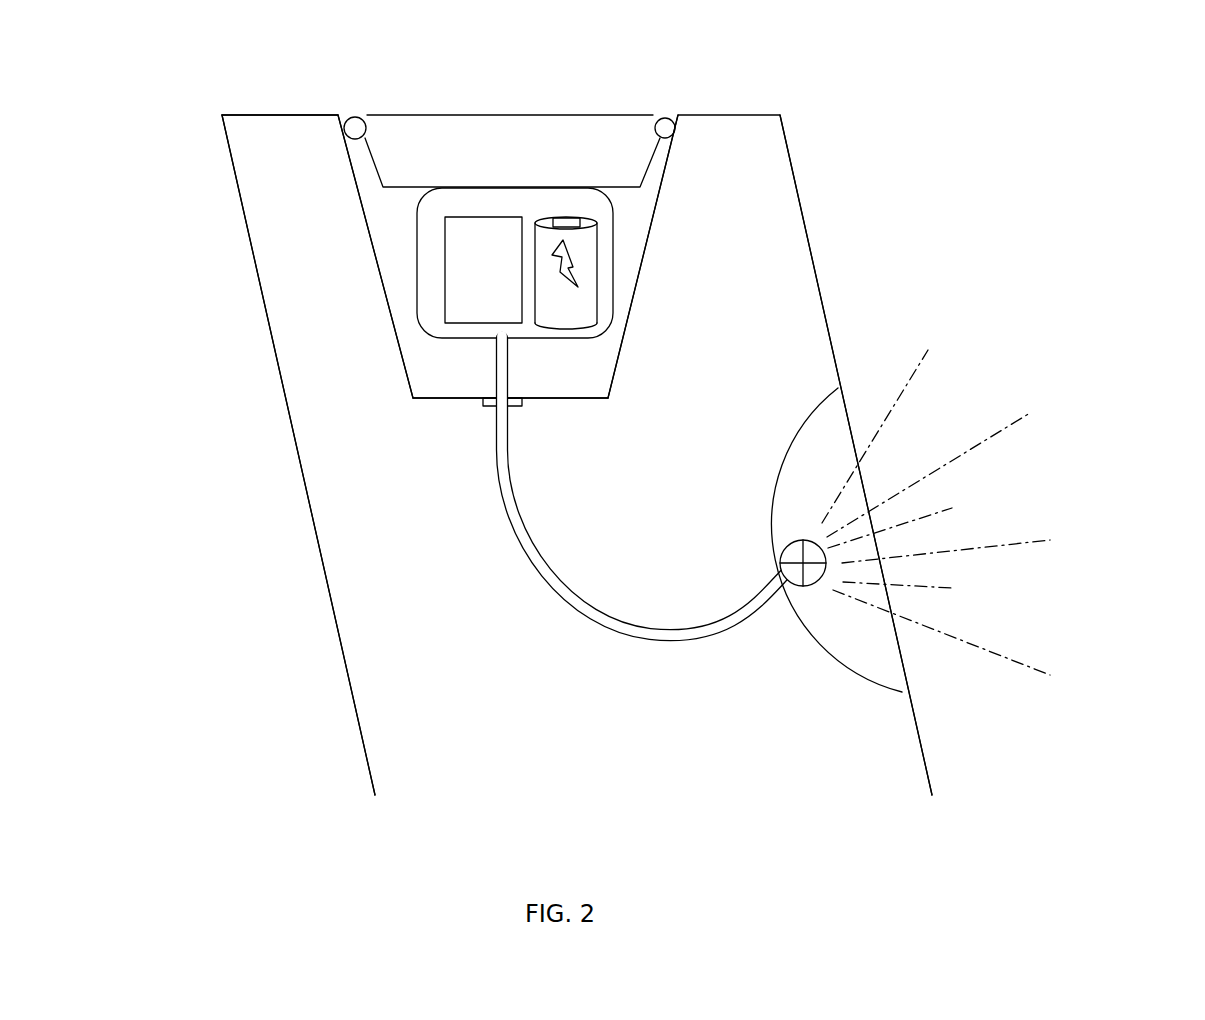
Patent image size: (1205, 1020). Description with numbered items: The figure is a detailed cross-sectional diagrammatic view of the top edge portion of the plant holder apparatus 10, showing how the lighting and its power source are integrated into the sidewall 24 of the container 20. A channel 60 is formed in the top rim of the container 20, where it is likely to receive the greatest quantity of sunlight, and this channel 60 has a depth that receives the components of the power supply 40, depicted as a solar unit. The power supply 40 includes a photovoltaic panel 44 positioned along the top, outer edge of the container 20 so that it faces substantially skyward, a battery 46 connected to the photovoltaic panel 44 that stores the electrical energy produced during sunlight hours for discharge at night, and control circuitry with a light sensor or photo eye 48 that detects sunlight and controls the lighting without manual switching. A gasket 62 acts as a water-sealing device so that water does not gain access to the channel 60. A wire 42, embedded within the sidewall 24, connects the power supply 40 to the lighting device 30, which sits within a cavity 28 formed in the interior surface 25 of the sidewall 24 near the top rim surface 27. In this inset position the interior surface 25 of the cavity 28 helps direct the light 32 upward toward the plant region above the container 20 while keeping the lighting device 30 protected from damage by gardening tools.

The plant holder apparatus 10 is at (100, 128).
The container 20 is at (727, 278).
The sidewall 24 is at (443, 573).
The interior surface 25 is at (826, 325).
The top rim surface 27 is at (267, 110).
The cavity 28 is at (787, 438).
The lighting device 30 is at (792, 555).
The light 32 is at (957, 528).
The power supply 40 is at (543, 204).
The wire 42 is at (587, 625).
The photovoltaic panel 44 is at (496, 163).
The battery 46 is at (551, 313).
The light sensor or photo eye 48 is at (473, 282).
The channel 60 is at (595, 365).
The gasket 62 is at (355, 116).